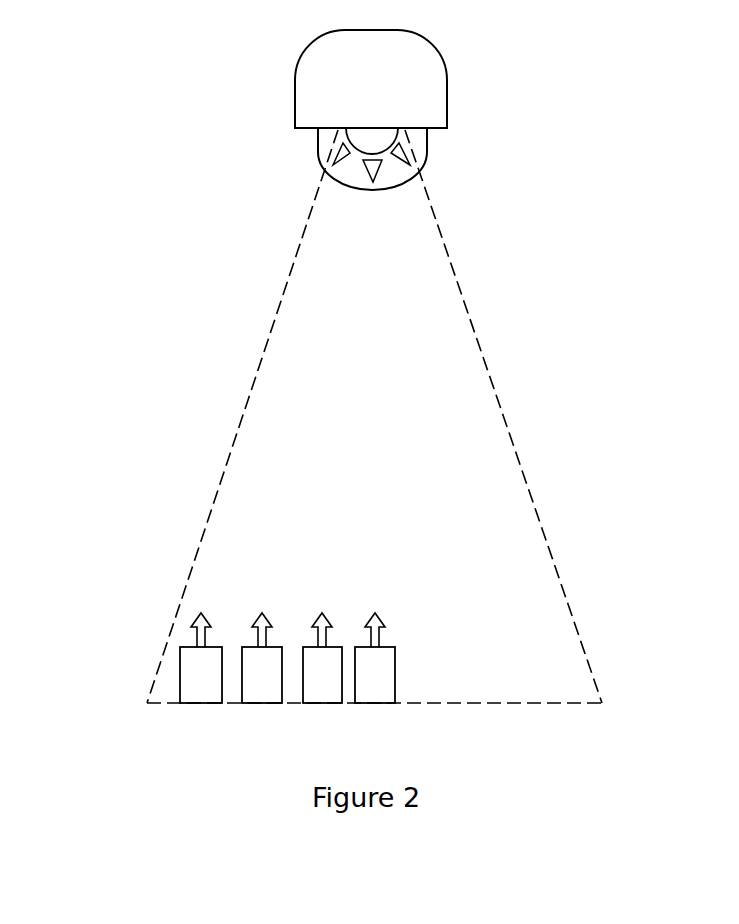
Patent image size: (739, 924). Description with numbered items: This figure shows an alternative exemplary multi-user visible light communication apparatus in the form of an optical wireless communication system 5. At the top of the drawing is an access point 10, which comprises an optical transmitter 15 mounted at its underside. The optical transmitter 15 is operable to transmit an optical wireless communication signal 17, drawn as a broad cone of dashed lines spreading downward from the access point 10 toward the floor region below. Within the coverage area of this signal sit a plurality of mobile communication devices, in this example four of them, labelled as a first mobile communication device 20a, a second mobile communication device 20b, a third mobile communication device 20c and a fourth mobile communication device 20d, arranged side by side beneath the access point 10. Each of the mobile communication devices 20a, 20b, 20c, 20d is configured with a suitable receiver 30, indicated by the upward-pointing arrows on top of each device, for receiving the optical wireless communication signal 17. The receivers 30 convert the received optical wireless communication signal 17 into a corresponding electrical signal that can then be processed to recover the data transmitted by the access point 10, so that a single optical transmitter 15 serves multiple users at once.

The optical wireless communication system 5 is at (138, 92).
The access point 10 is at (307, 56).
The optical transmitter 15 is at (320, 152).
The optical wireless communication signal 17 is at (302, 278).
The mobile communication device 20a is at (208, 688).
The mobile communication device 20b is at (265, 692).
The mobile communication device 20c is at (333, 692).
The mobile communication device 20d is at (375, 693).
The receiver 30 is at (250, 622).